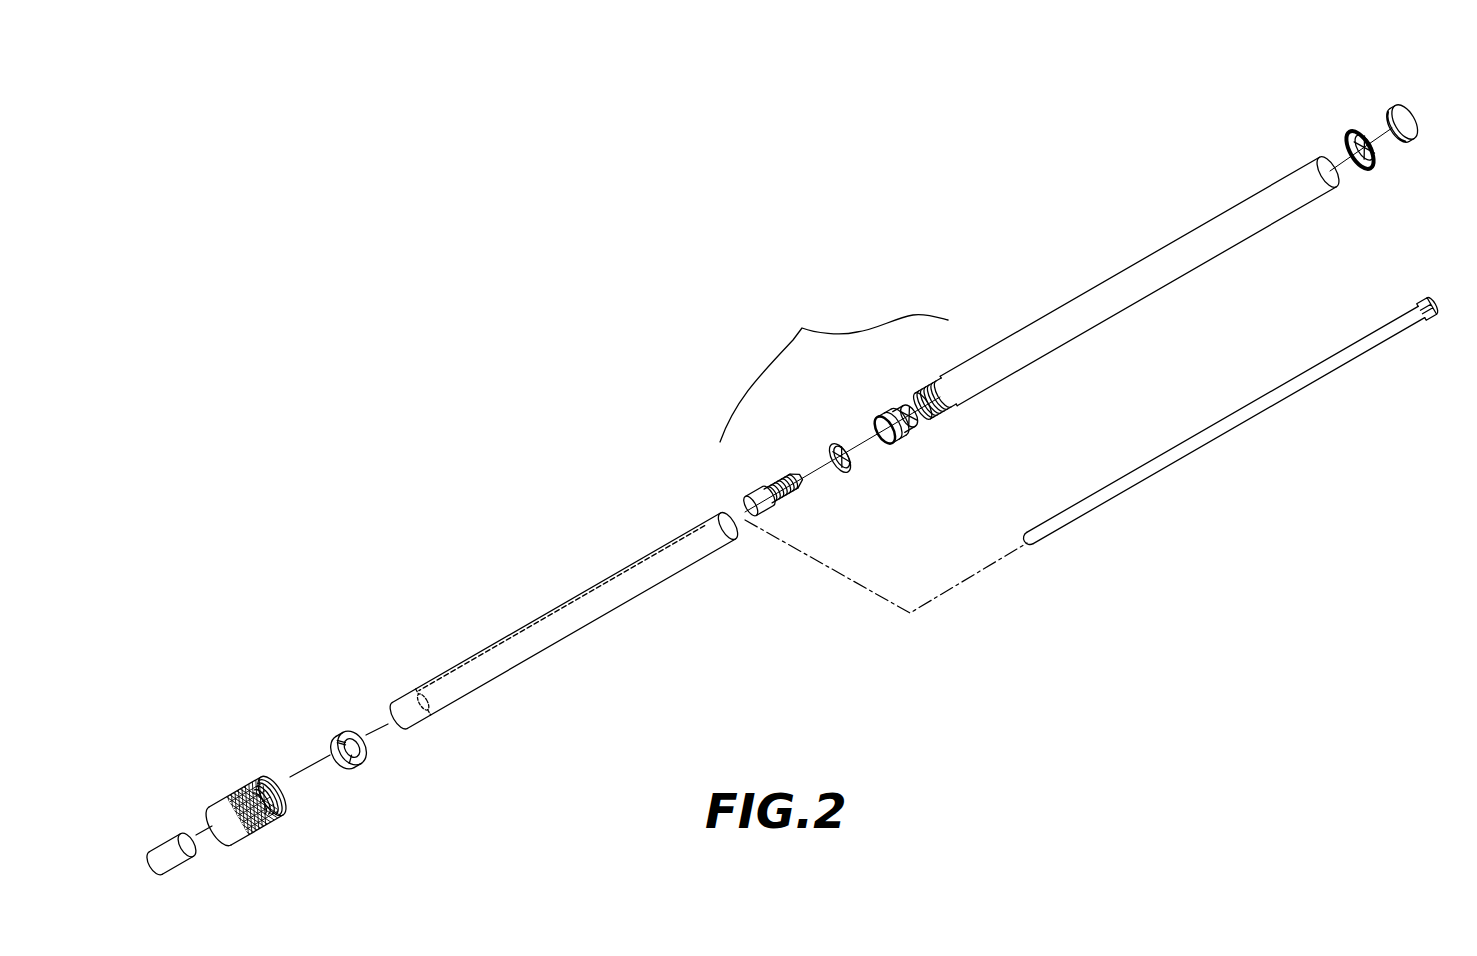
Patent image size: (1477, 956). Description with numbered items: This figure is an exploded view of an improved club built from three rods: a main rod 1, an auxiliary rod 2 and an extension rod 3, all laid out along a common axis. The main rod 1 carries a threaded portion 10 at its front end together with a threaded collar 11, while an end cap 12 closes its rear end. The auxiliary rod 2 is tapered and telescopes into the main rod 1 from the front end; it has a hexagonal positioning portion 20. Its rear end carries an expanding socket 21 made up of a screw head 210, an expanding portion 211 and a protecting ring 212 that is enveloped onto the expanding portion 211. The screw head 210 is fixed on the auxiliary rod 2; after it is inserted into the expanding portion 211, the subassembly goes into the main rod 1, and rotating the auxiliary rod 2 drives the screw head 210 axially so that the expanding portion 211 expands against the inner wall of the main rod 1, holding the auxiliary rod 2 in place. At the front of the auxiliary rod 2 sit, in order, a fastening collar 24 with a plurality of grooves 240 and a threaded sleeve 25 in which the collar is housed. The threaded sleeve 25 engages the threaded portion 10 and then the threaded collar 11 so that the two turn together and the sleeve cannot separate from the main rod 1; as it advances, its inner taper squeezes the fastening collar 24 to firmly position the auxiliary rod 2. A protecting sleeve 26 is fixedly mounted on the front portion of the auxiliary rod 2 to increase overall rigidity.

The main rod 1 is at (1140, 272).
The threaded portion 10 is at (945, 377).
The threaded collar 11 is at (1345, 133).
The end cap 12 is at (1405, 115).
The auxiliary rod 2 is at (622, 572).
The positioning portion 20 is at (406, 694).
The expanding socket 21 is at (834, 369).
The screw head 210 is at (778, 488).
The expanding portion 211 is at (883, 412).
The protecting ring 212 is at (834, 440).
The fastening collar 24 is at (356, 740).
The grooves 240 is at (331, 748).
The threaded sleeve 25 is at (238, 790).
The protecting sleeve 26 is at (165, 842).
The extension rod 3 is at (1260, 405).